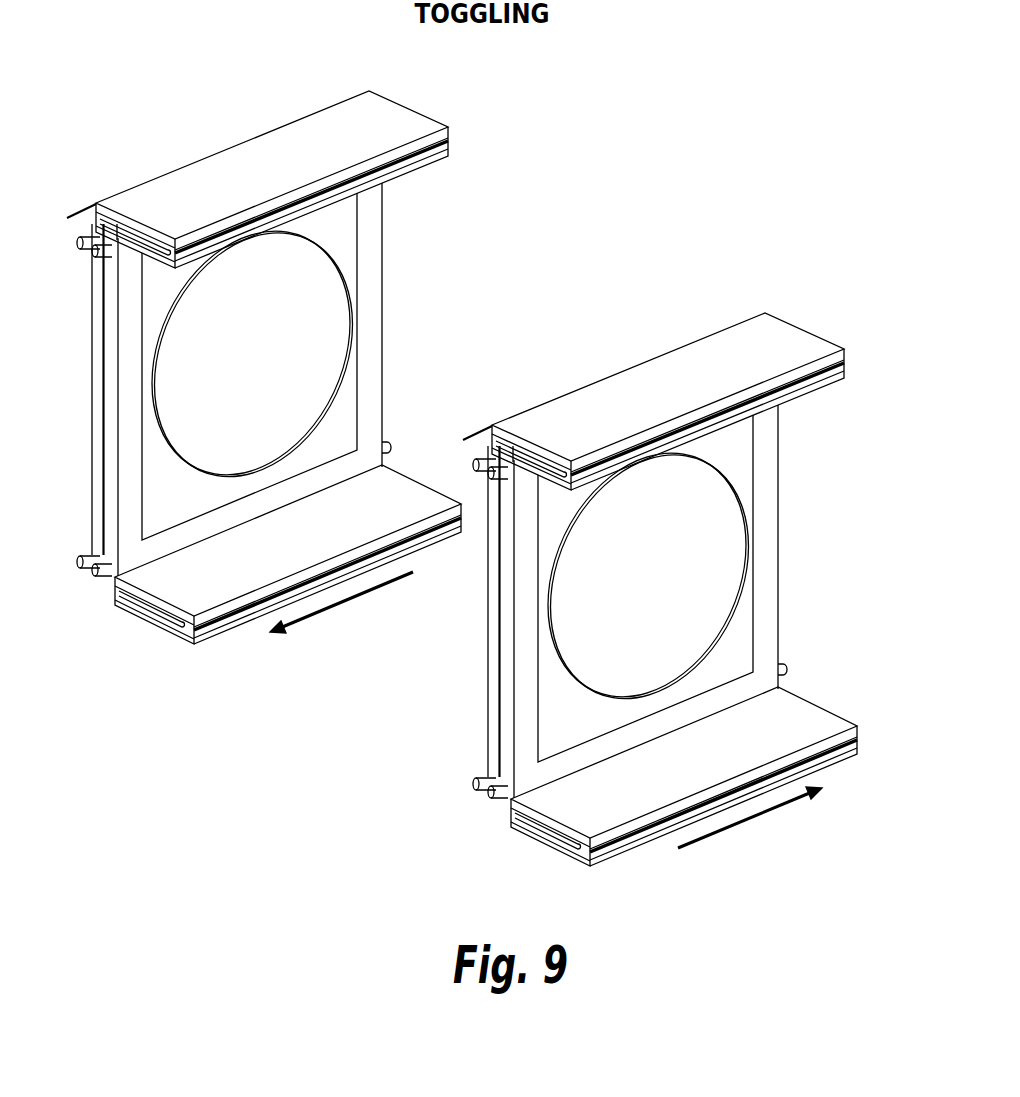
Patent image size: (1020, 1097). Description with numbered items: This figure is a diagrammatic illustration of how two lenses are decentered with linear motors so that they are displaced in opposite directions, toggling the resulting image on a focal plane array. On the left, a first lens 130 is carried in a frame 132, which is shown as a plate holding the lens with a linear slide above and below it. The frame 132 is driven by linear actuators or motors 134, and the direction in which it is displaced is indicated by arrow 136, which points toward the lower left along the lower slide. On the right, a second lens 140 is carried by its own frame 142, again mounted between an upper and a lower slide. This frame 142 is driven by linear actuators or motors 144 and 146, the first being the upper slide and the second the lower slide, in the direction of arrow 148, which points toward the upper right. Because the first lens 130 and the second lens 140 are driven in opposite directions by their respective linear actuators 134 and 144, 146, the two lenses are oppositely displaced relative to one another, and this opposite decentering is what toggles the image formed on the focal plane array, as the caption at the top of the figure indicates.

The first lens 130 is at (307, 268).
The frame 132 is at (382, 314).
The linear actuators or motors 134 is at (408, 123).
The arrow 136 is at (345, 603).
The second lens 140 is at (697, 576).
The frame 142 is at (664, 601).
The linear actuators or motors 144 is at (673, 380).
The linear actuators or motors 146 is at (702, 760).
The arrow 148 is at (770, 824).